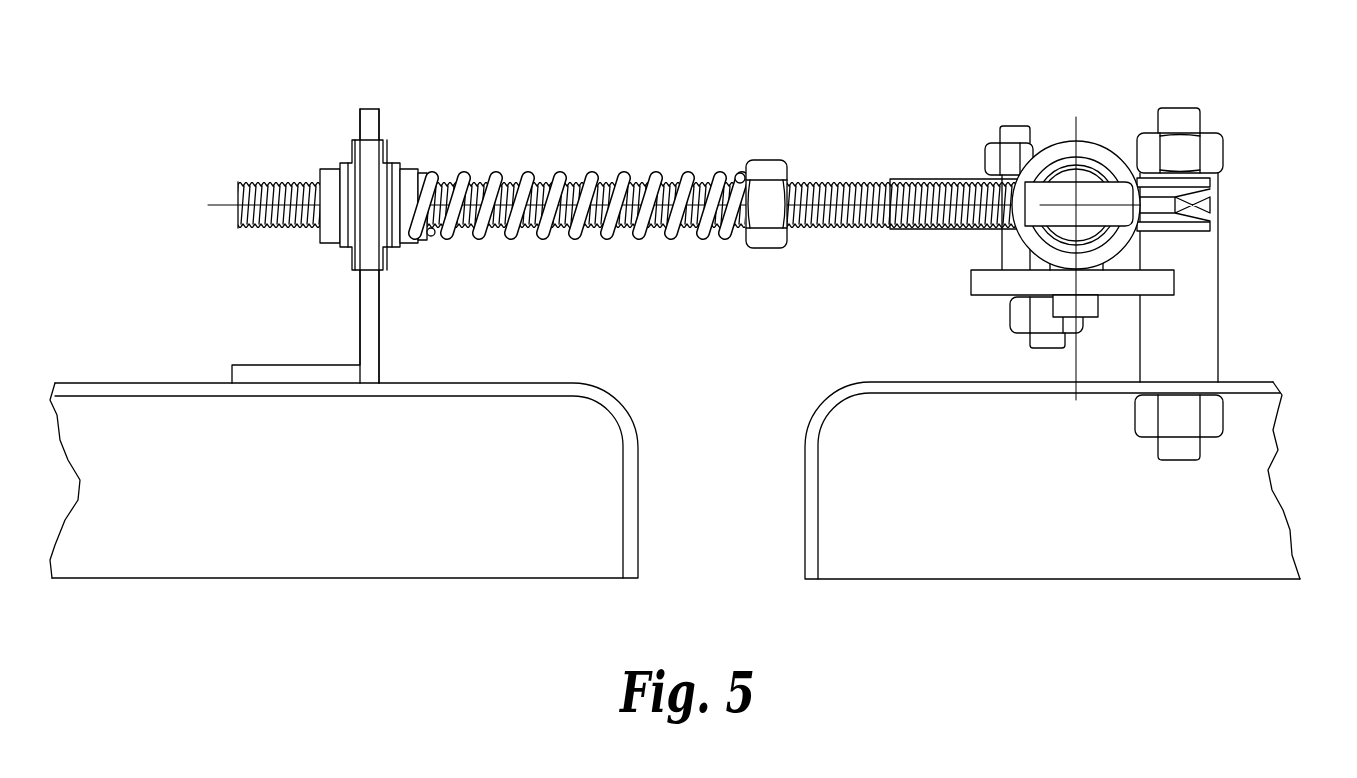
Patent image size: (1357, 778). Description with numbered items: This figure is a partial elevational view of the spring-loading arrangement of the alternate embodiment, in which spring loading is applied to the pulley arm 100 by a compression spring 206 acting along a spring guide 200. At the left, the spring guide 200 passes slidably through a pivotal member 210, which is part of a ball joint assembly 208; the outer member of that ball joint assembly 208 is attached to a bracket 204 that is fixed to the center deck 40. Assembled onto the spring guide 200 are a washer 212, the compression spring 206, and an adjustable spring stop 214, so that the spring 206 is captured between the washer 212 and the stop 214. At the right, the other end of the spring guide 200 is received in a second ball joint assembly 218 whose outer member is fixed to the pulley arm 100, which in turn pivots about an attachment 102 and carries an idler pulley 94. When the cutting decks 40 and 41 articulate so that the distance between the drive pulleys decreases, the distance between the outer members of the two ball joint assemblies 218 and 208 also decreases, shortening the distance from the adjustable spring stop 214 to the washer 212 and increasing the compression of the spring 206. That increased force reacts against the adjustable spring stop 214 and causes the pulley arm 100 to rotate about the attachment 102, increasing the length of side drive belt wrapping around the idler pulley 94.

The center deck 40 is at (260, 383).
The cutting deck 41 is at (980, 387).
The spring guide 200 is at (207, 187).
The bracket 204 is at (370, 245).
The ball joint assembly 208 is at (383, 150).
The pivotal member 210 is at (407, 243).
The washer 212 is at (420, 170).
The compression spring 206 is at (627, 175).
The adjustable spring stop 214 is at (762, 160).
The ball joint assembly 218 is at (1113, 150).
The idler pulley 94 is at (1183, 213).
The attachment 102 is at (1198, 268).
The pulley arm 100 is at (1155, 285).